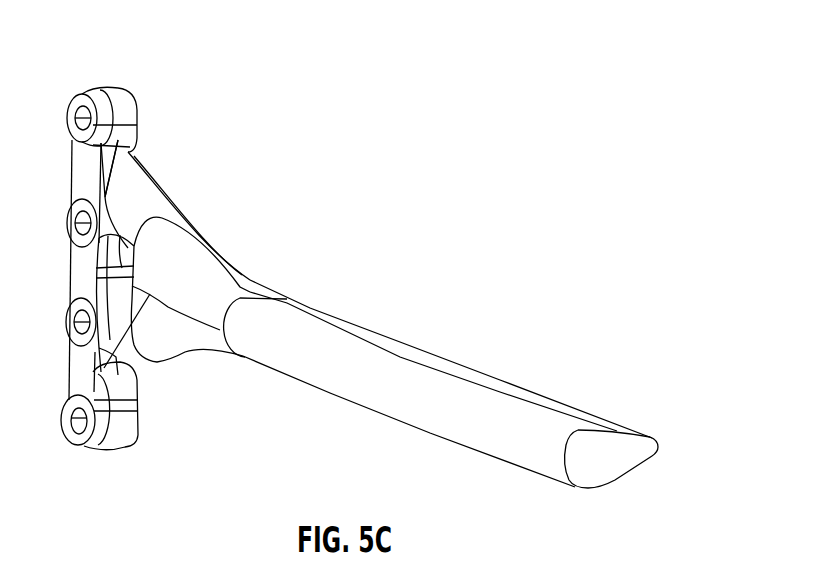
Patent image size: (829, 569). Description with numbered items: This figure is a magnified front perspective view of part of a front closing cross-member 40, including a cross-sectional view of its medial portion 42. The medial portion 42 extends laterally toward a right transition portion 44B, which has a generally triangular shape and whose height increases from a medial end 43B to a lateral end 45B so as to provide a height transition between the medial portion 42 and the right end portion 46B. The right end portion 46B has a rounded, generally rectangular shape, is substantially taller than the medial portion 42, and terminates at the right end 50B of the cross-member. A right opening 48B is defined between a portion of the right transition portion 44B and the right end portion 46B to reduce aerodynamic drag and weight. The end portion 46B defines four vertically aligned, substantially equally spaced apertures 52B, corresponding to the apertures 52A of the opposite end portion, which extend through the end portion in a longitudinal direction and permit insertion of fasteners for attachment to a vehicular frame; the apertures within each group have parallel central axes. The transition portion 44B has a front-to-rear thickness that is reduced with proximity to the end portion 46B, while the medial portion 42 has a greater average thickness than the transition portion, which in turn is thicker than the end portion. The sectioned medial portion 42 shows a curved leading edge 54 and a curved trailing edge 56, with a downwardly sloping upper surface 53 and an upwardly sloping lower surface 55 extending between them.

The front closing cross-member 40 is at (421, 233).
The medial portion 42 is at (472, 370).
The medial end 43B is at (287, 298).
The right transition portion 44B is at (147, 78).
The lateral end 45B is at (130, 158).
The right end portion 46B is at (68, 52).
The right opening 48B is at (140, 287).
The right end 50B is at (72, 165).
The apertures 52A is at (795, 10).
The apertures 52B is at (78, 322).
The downwardly sloping upper surface 53 is at (608, 432).
The curved leading edge 54 is at (565, 465).
The upwardly sloping lower surface 55 is at (620, 478).
The curved trailing edge 56 is at (658, 448).